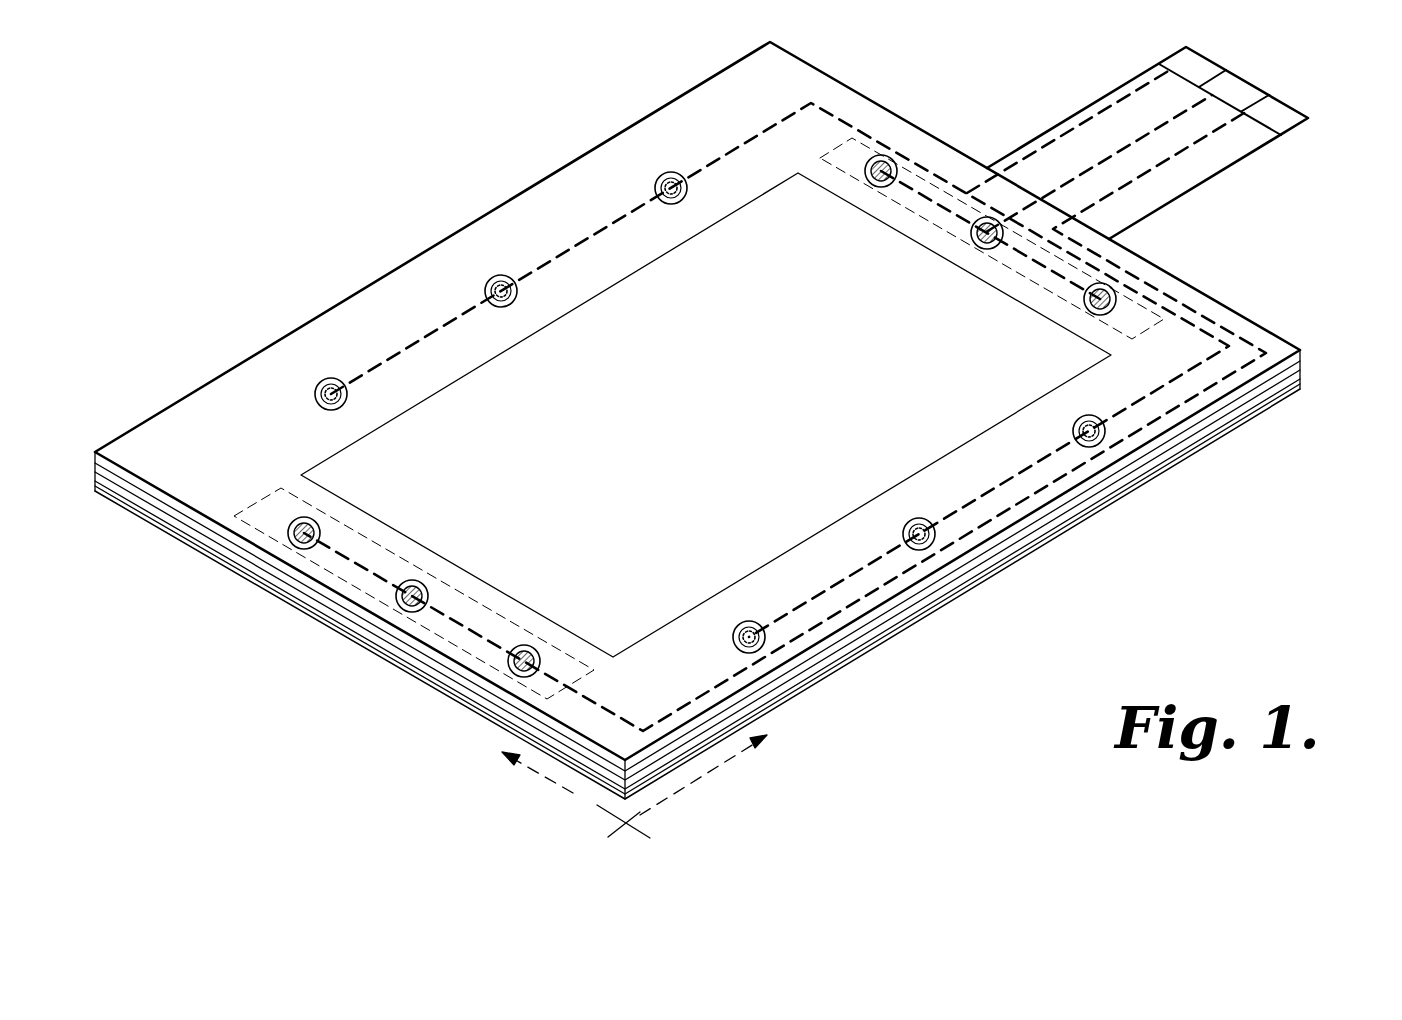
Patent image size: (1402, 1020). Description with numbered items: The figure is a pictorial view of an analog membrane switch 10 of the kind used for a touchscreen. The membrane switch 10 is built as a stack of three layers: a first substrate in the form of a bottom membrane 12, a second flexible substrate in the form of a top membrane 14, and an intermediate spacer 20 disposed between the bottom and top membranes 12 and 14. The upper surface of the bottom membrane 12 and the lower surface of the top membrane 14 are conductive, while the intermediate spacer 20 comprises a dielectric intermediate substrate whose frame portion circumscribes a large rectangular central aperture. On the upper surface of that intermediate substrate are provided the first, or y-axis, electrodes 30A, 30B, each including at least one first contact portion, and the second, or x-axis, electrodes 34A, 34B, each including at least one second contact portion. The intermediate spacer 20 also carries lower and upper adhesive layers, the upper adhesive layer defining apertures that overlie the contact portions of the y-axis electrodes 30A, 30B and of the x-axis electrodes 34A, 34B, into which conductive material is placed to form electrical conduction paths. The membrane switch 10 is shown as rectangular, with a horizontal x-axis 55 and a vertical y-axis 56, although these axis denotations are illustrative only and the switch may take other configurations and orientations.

The analog membrane switch 10 is at (243, 178).
The bottom membrane 12 is at (1303, 387).
The top membrane 14 is at (1303, 350).
The intermediate spacer 20 is at (1303, 369).
The y-axis electrode 30A is at (491, 282).
The y-axis electrode 30B is at (937, 537).
The x-axis electrode 34A is at (296, 540).
The x-axis electrode 34B is at (892, 163).
The horizontal x-axis 55 is at (582, 806).
The vertical y-axis 56 is at (676, 808).